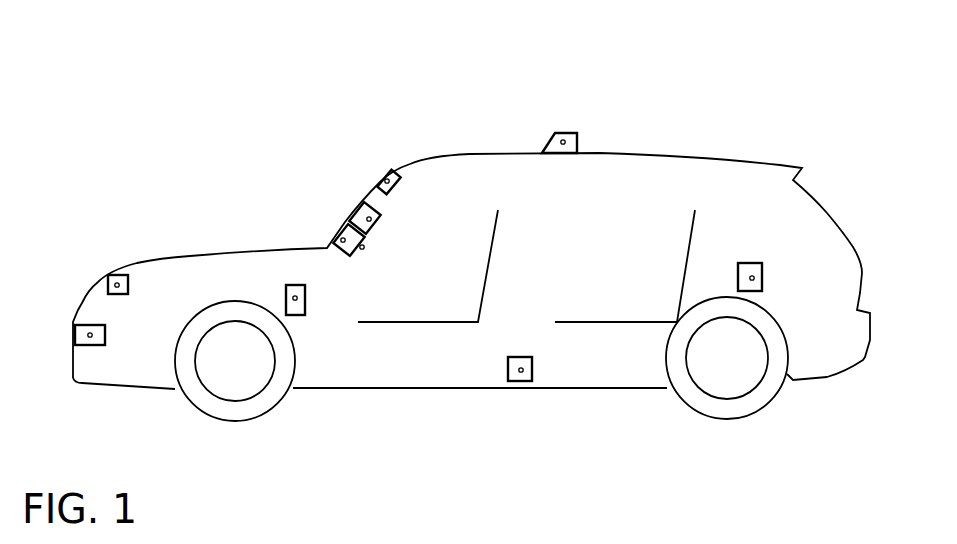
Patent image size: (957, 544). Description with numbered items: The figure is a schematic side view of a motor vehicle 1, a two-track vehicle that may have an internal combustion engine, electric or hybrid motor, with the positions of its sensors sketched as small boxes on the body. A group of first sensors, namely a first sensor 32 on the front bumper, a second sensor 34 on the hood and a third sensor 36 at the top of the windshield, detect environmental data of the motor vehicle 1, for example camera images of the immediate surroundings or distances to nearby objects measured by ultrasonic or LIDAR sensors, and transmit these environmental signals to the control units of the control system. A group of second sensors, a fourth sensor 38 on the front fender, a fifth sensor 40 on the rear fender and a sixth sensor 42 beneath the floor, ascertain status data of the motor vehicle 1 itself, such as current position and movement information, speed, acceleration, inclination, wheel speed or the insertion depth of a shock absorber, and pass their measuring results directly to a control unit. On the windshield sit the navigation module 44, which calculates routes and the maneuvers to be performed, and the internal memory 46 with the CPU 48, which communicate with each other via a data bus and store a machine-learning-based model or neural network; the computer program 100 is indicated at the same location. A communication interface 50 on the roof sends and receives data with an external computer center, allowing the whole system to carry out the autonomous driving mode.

The motor vehicle 1 is at (230, 115).
The first sensor 32 is at (90, 338).
The second sensor 34 is at (118, 282).
The third sensor 36 is at (388, 177).
The fourth sensor 38 is at (295, 298).
The fifth sensor 40 is at (752, 275).
The sixth sensor 42 is at (521, 373).
The navigation module 44 is at (372, 220).
The internal memory 46 is at (324, 200).
The CPU 48 is at (343, 237).
The communication interface 50 is at (564, 140).
The computer program 100 is at (364, 249).